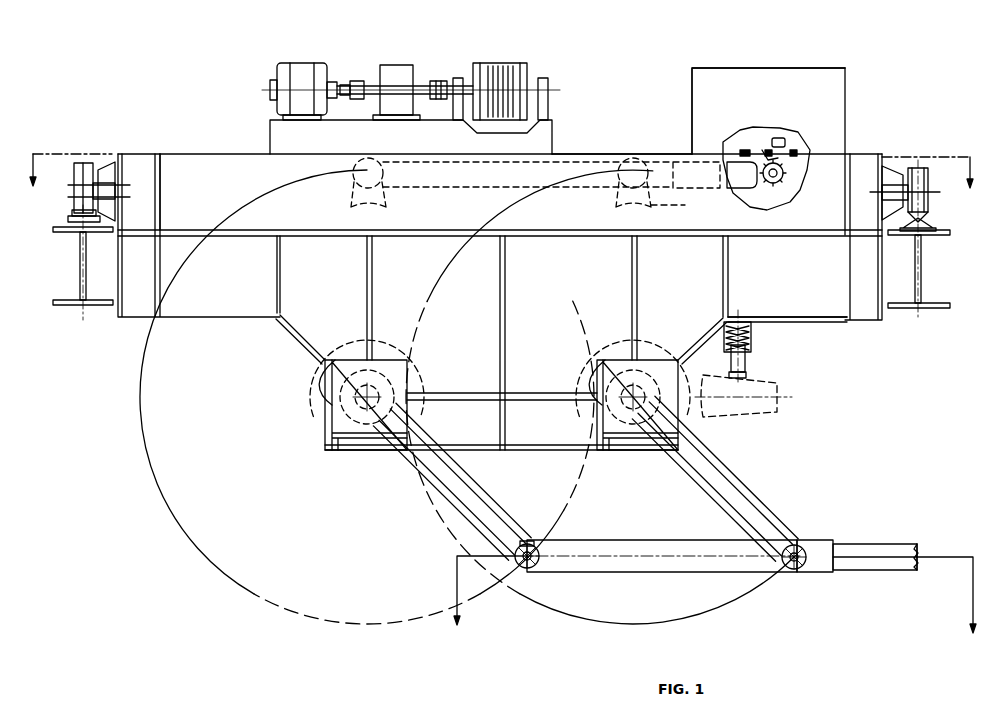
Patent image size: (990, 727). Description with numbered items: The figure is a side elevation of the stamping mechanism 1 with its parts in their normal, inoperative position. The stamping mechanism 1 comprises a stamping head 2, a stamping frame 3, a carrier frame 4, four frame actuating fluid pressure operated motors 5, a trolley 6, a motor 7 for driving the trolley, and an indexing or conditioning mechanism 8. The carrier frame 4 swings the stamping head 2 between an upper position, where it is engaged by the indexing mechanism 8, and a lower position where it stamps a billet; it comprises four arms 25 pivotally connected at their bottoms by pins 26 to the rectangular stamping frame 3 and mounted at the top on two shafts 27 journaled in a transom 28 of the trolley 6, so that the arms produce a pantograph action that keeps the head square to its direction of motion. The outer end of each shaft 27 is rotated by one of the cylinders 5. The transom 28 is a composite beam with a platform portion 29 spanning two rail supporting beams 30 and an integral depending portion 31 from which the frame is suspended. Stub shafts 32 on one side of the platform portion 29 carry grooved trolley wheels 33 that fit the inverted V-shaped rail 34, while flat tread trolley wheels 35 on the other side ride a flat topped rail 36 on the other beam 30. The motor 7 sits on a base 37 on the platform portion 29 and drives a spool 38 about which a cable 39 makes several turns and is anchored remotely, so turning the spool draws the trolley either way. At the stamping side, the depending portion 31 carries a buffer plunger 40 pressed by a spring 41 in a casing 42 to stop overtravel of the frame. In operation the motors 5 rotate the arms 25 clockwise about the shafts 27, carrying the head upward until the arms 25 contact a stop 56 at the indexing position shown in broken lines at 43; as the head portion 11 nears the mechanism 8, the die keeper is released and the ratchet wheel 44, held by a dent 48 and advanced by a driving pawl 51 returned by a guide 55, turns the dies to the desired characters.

The stamping mechanism 1 is at (866, 153).
The stamping head 2 is at (870, 530).
The stamping frame 3 is at (597, 160).
The carrier frame 4 is at (773, 402).
The frame actuating, fluid pressure operated motors 5 is at (313, 373).
The trolley 6 is at (566, 151).
The motor 7 is at (303, 62).
The indexing or conditioning mechanism 8 is at (815, 66).
The head portion 11 is at (917, 547).
The arms 25 is at (493, 510).
The pins 26 is at (538, 566).
The shafts 27 is at (340, 408).
The transom 28 is at (818, 320).
The platform portion 29 is at (213, 163).
The rail supporting beams 30 is at (78, 307).
The depending portion 31 is at (303, 327).
The stub shafts 32 is at (100, 183).
The grooved trolley wheels 33 is at (925, 170).
The rail 34 is at (925, 231).
The flat tread trolley wheels 35 is at (88, 165).
The flat topped rail 36 is at (80, 223).
The base 37 is at (268, 131).
The spool 38 is at (528, 64).
The cable 39 is at (495, 63).
The buffer plunger 40 is at (753, 369).
The spring 41 is at (753, 343).
The casing 42 is at (753, 333).
The indexing position 43 is at (690, 160).
The ratchet wheel 44 is at (786, 174).
The dent 48 is at (763, 160).
The driving pawl 51 is at (790, 150).
The guide 55 is at (777, 138).
The stop 56 is at (685, 207).